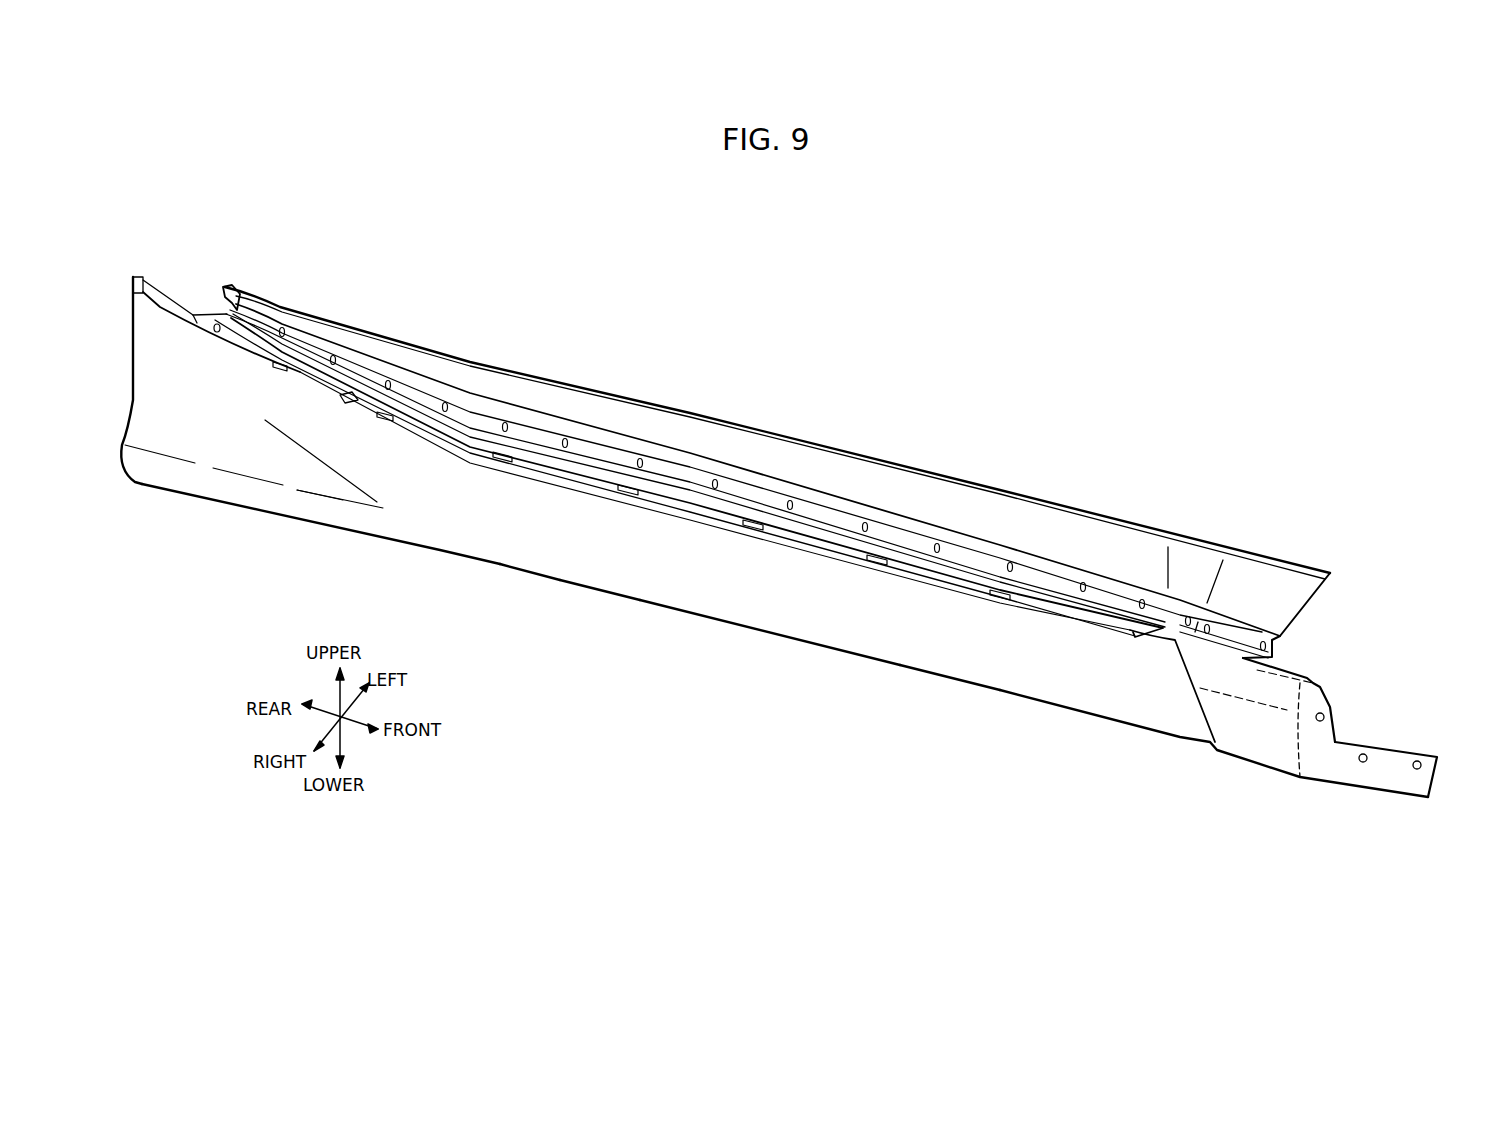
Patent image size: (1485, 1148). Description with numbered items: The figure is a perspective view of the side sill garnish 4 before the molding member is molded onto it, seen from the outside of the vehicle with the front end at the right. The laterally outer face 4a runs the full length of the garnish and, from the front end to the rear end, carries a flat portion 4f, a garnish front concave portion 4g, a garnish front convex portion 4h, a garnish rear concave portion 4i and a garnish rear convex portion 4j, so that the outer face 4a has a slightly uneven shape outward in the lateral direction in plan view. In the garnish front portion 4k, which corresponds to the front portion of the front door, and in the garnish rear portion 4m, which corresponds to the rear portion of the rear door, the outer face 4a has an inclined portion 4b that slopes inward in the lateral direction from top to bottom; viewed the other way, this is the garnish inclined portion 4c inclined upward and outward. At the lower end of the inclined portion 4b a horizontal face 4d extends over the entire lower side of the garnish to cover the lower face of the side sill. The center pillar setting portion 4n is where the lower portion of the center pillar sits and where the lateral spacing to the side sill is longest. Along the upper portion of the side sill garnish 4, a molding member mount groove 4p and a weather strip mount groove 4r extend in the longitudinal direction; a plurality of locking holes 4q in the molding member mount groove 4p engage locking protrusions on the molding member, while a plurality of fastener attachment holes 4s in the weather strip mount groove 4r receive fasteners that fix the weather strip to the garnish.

The side sill garnish 4 is at (752, 425).
The outer face 4a is at (697, 578).
The inclined portion 4b is at (935, 645).
The garnish inclined portion 4c is at (490, 525).
The horizontal face 4d is at (1355, 787).
The flat portion 4f is at (1267, 692).
The garnish front concave portion 4g is at (1160, 693).
The garnish front convex portion 4h is at (597, 547).
The garnish rear concave portion 4i is at (257, 405).
The garnish rear convex portion 4j is at (170, 368).
The garnish front portion 4k is at (1043, 663).
The garnish rear portion 4m is at (282, 453).
The center pillar setting portion 4n is at (543, 535).
The molding member mount groove 4p is at (355, 393).
The locking holes 4q is at (1003, 592).
The weather strip mount groove 4r is at (478, 415).
The fastener attachment holes 4s is at (864, 522).